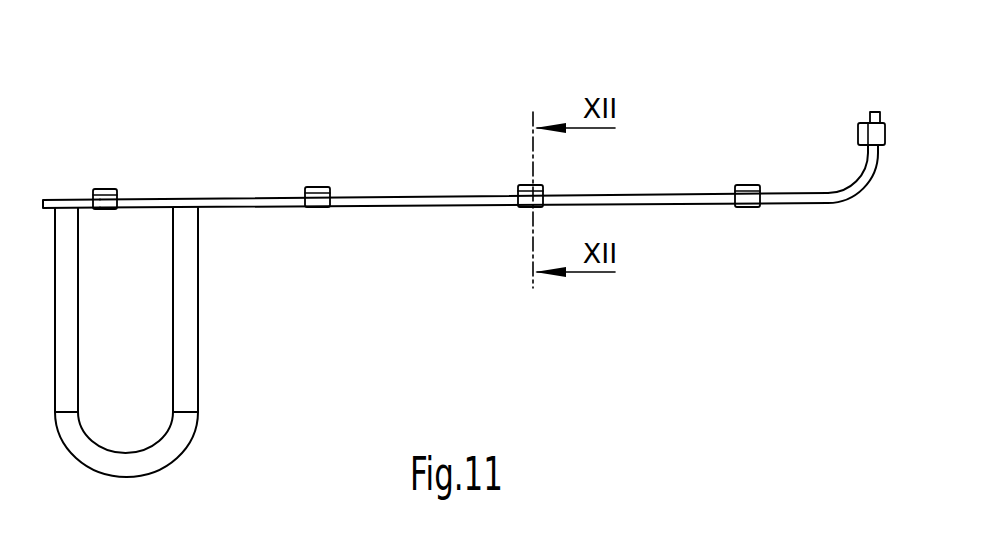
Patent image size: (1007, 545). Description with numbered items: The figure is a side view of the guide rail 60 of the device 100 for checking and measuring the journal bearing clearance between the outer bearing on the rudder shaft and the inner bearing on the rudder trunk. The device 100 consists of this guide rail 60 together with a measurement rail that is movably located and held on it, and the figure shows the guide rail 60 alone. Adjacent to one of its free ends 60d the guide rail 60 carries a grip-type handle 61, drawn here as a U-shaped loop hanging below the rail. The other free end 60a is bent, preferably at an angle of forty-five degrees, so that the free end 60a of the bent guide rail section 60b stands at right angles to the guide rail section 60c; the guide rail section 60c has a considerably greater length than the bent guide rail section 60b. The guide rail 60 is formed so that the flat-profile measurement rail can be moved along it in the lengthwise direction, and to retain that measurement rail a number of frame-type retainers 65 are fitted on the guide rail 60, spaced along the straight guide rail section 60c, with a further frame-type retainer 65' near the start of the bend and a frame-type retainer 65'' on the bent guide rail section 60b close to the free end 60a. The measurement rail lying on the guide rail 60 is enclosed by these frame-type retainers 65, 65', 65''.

The guide rail 60 is at (483, 173).
The free end 60a is at (882, 123).
The bent guide rail section 60b is at (852, 192).
The guide rail section 60c is at (432, 195).
The free end 60d is at (69, 199).
The grip-type handle 61 is at (187, 305).
The frame-type retainer 65 is at (318, 127).
The frame-type retainer 65' is at (738, 142).
The frame-type retainer 65'' is at (832, 82).
The device 100 is at (377, 186).